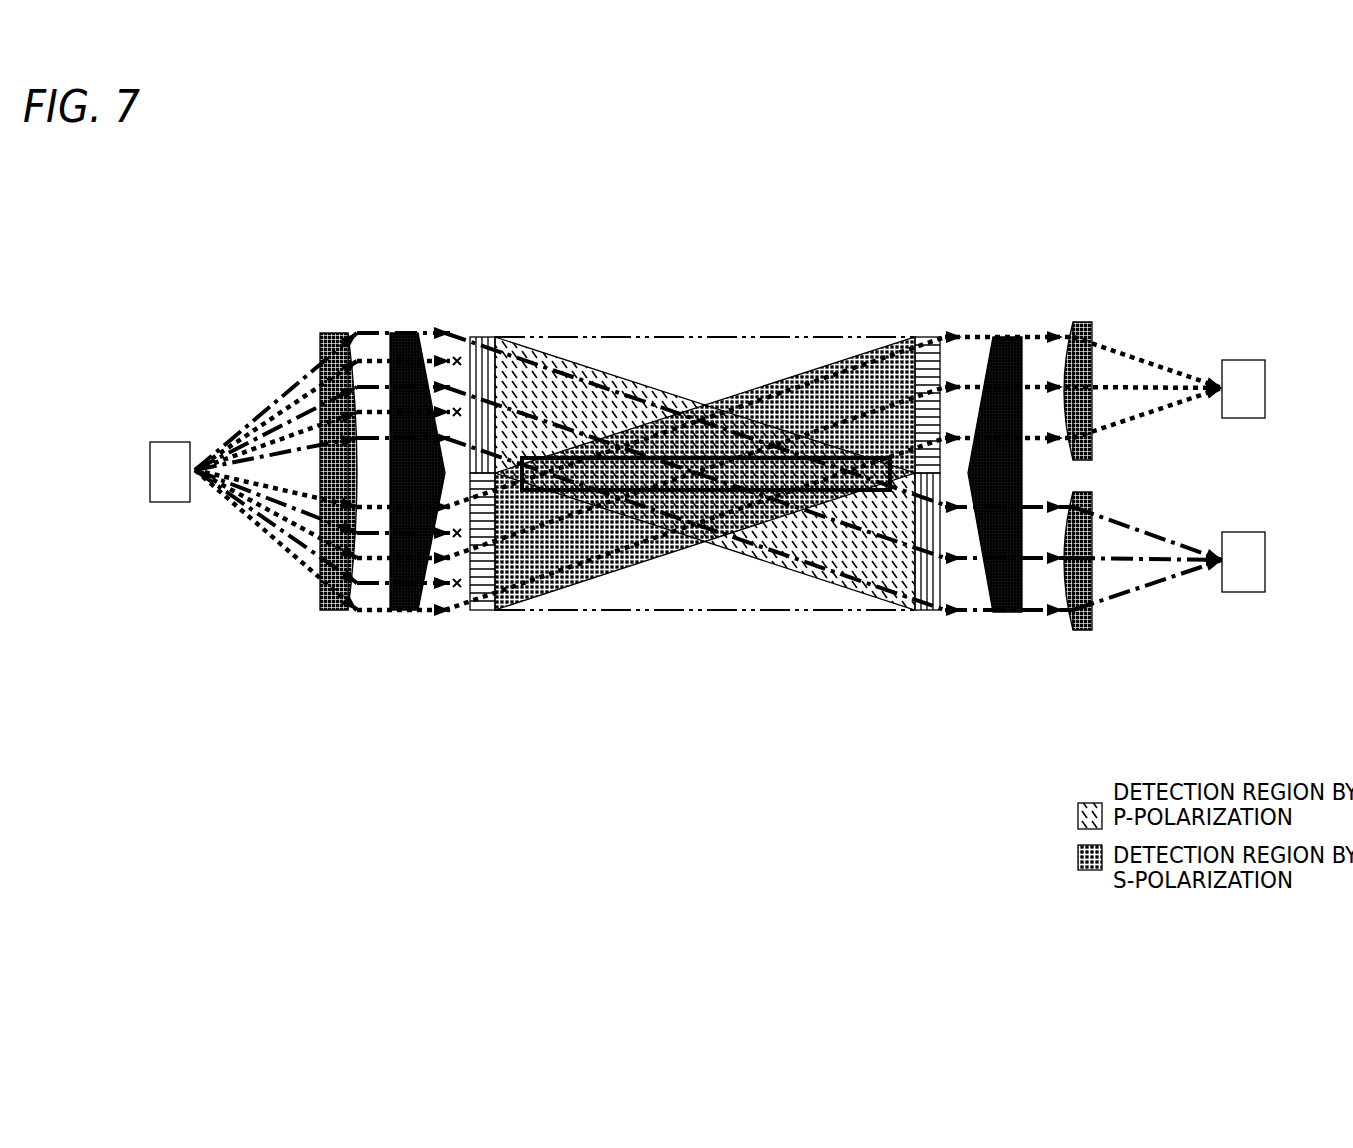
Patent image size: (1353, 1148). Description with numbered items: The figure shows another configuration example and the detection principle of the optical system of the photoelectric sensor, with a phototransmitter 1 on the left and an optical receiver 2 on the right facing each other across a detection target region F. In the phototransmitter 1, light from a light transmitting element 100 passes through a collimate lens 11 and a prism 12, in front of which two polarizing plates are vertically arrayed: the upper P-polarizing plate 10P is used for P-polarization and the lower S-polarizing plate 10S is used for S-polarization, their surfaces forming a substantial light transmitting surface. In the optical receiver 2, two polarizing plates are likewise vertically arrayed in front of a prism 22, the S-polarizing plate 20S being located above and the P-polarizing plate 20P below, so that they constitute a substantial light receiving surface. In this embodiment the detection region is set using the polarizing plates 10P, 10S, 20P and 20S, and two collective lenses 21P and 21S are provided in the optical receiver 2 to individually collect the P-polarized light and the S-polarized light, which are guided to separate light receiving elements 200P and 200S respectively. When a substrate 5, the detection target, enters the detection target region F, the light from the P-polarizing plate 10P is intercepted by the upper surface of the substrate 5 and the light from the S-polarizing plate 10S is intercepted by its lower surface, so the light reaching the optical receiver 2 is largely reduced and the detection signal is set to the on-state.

The phototransmitter 1 is at (286, 274).
The optical receiver 2 is at (1138, 262).
The substrate 5 is at (718, 545).
The collimate lens 11 is at (333, 337).
The prism 12 is at (405, 337).
The P-polarizing plate 10P is at (485, 337).
The S-polarizing plate 10S is at (485, 610).
The S-polarizing plate 20S is at (925, 337).
The P-polarizing plate 20P is at (925, 612).
The prism 22 is at (1005, 337).
The collective lens 21S is at (1080, 322).
The collective lens 21P is at (1080, 630).
The light transmitting element 100 is at (168, 455).
The light receiving element 200S is at (1245, 372).
The light receiving element 200P is at (1245, 585).
The detection target region F is at (782, 337).